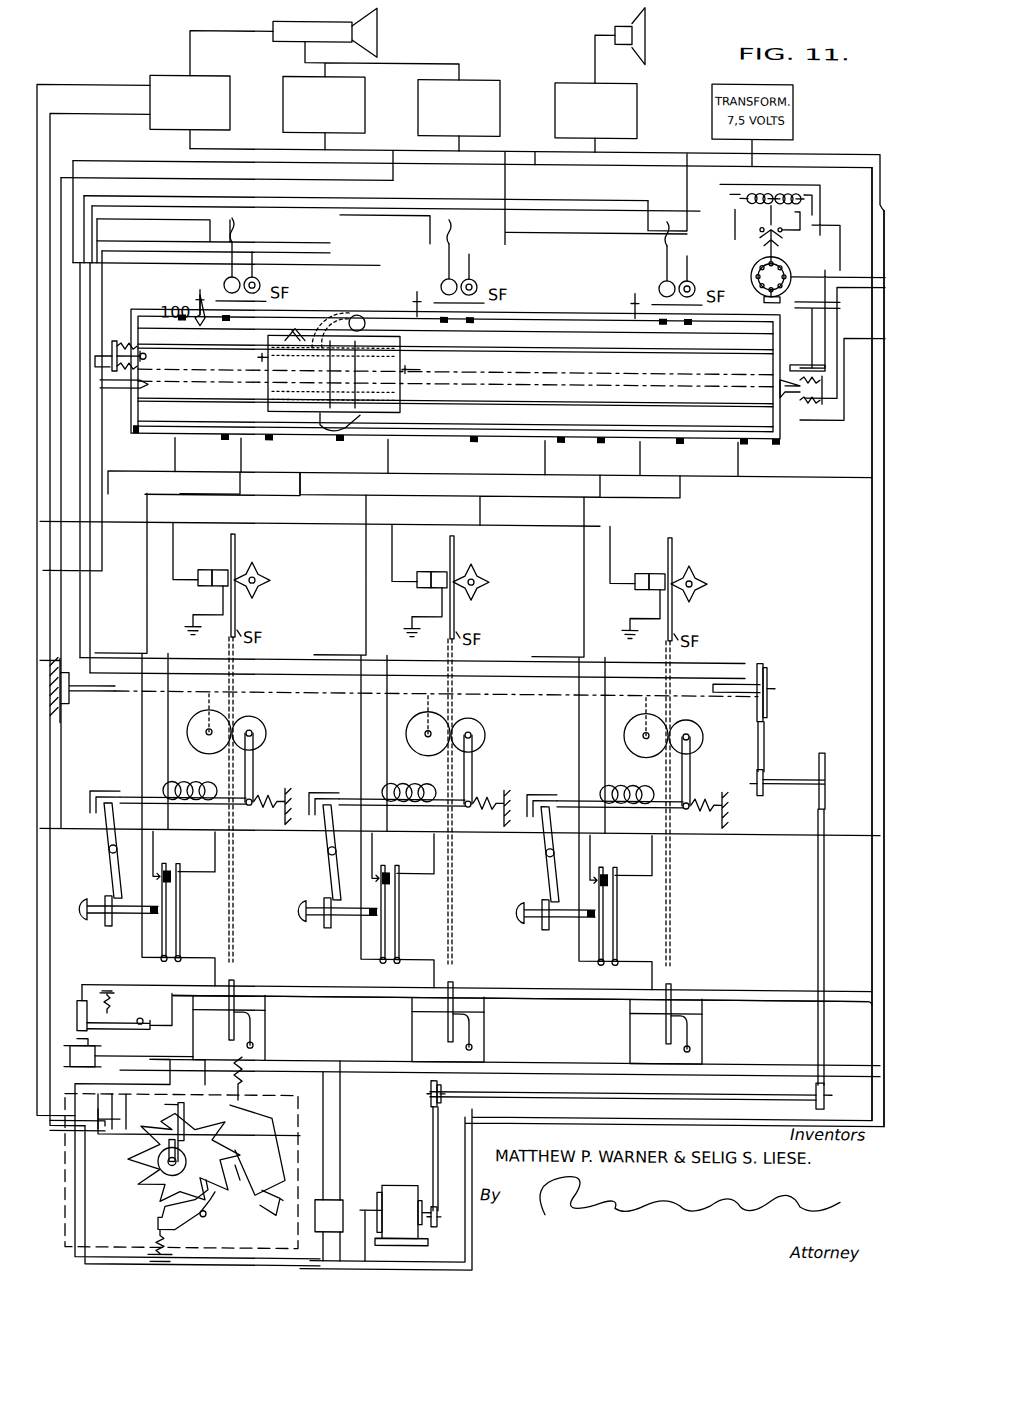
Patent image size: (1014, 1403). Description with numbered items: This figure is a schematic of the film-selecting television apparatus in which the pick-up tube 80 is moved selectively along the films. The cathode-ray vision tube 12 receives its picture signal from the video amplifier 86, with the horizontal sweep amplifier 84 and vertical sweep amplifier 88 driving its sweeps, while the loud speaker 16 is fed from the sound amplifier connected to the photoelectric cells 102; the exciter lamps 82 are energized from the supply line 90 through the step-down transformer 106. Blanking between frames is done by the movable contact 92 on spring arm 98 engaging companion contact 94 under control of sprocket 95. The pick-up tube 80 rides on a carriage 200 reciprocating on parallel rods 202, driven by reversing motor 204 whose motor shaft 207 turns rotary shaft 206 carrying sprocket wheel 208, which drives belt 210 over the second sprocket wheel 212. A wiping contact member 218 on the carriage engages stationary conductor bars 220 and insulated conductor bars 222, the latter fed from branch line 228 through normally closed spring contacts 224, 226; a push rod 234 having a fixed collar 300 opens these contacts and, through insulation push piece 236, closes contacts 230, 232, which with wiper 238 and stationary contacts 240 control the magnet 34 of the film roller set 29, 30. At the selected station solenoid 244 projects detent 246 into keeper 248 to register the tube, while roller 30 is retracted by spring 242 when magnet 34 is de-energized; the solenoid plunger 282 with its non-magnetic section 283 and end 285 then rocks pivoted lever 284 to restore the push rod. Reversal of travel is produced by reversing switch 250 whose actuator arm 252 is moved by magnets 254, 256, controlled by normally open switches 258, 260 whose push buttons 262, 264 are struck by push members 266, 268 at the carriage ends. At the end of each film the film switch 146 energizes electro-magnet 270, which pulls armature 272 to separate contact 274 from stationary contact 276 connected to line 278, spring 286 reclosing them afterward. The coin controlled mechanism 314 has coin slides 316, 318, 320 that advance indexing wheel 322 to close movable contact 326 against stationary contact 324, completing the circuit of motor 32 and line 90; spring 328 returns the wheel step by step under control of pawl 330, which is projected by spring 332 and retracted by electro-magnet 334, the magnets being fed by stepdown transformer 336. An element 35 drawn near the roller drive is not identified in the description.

The cathode-ray vision tube 12 is at (386, 30).
The loud speaker 16 is at (654, 31).
The film driving roller 29 is at (200, 730).
The film roller 30 is at (261, 726).
The motor 32 is at (399, 1189).
The film roller magnet 34 is at (190, 780).
The drive shaft 35 is at (740, 681).
The cathode ray pick-up tube 80 is at (345, 368).
The exciter lamps 82 is at (224, 282).
The horizontal sweep amplifier 84 is at (498, 109).
The video amplifier 86 is at (229, 104).
The vertical sweep amplifier 88 is at (360, 104).
The supply line 90 is at (452, 1258).
The movable contact 92 is at (218, 568).
The companion contact 94 is at (200, 570).
The film engaging sprocket 95 is at (256, 574).
The spring arm 98 is at (222, 600).
The photoelectric cell 102 is at (258, 279).
The step-down transformer 106 is at (636, 105).
The film controlled switch 146 is at (225, 1032).
The carriage 200 is at (262, 388).
The parallel rods 202 is at (665, 393).
The reversing motor 204 is at (752, 257).
The rotary shaft 206 is at (810, 324).
The motor shaft 207 is at (762, 293).
The sprocket wheel 208 is at (813, 358).
The belt or sprocket chain 210 is at (688, 371).
The second sprocket wheel 212 is at (112, 388).
The wiping contact member 218 is at (358, 418).
The stationary conductor bars 220 is at (760, 437).
The conductor bars 222 is at (686, 437).
The spring contact member 224 is at (174, 869).
The spring contact member 226 is at (156, 866).
The branch line 228 is at (505, 472).
The spring contact 230 is at (180, 909).
The companion contact member 232 is at (190, 879).
The push rod 234 is at (136, 924).
The insulation push piece 236 is at (191, 878).
The wiper 238 is at (355, 310).
The stationary contact members 240 is at (682, 322).
The spring 242 is at (272, 794).
The carriage positioning solenoid 244 is at (630, 302).
The plunger or detent 246 is at (200, 321).
The keeper 248 is at (292, 341).
The reversing switch 250 is at (758, 225).
The actuator arm 252 is at (790, 202).
The magnet 254 is at (752, 183).
The magnet 256 is at (792, 183).
The normally open switch 258 is at (115, 338).
The normally open switch 260 is at (815, 397).
The push button 262 is at (146, 356).
The push button 264 is at (778, 384).
The push member 266 is at (258, 355).
The push member 268 is at (408, 370).
The electro-magnet 270 is at (68, 1060).
The armature 272 is at (80, 1026).
The contact 274 is at (77, 1010).
The stationary contact 276 is at (75, 998).
The line 278 is at (712, 987).
The solenoid plunger 282 is at (189, 806).
The non-magnetic section 283 is at (118, 790).
The pivoted lever 284 is at (110, 866).
The plunger end 285 is at (90, 808).
The spring 286 is at (110, 1006).
The fixed collar 300 is at (105, 918).
The coin controlled mechanism 314 is at (63, 1155).
The coin slide 316 is at (96, 1103).
The coin slide 318 is at (114, 1093).
The coin slide 320 is at (130, 1096).
The indexing toothed wheel 322 is at (198, 1132).
The stationary contact member 324 is at (180, 1102).
The movable contact member 326 is at (180, 1148).
The spring 328 is at (160, 1178).
The pawl 330 is at (218, 1205).
The spring 332 is at (170, 1240).
The electro-magnet 334 is at (258, 1193).
The stepdown transformer 336 is at (343, 1202).